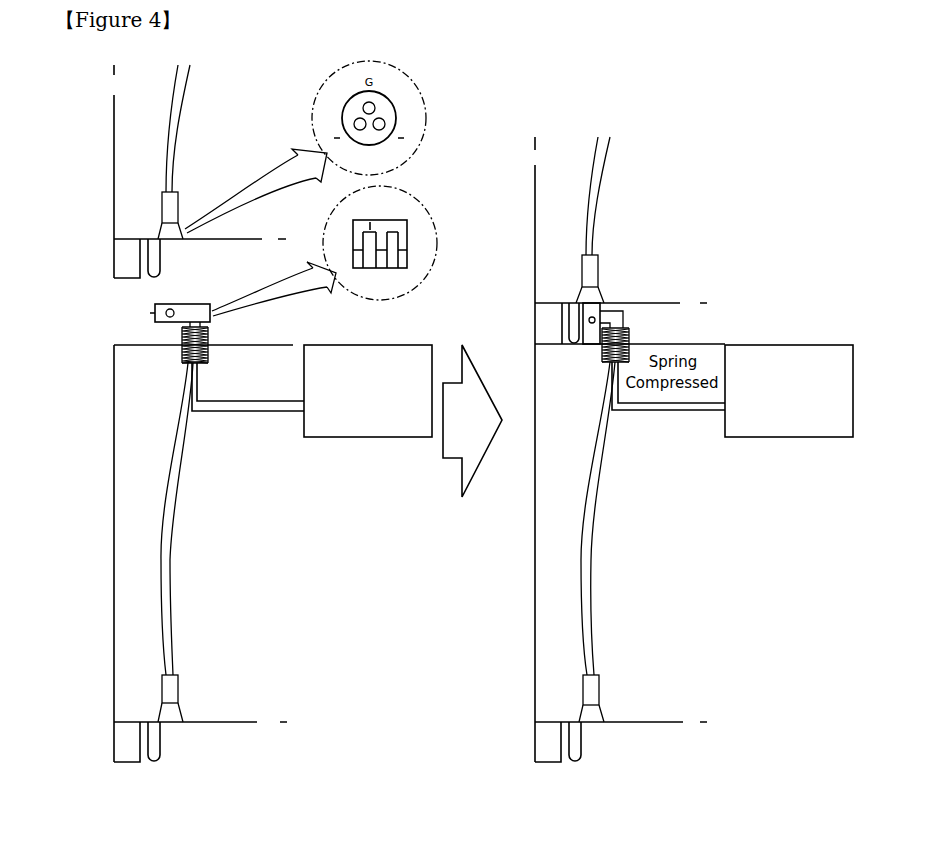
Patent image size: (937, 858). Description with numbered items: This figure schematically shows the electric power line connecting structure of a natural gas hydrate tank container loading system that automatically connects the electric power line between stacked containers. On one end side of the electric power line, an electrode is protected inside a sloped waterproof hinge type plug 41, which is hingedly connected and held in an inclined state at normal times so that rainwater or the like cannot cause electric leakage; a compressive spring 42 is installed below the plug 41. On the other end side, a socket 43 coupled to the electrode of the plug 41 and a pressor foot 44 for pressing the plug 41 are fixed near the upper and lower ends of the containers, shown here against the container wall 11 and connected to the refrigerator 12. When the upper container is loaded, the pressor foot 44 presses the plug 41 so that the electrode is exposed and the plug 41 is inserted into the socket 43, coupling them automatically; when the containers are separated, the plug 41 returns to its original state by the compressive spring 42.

The display stand wall 11 is at (126, 172).
The refrigerator 12 is at (345, 437).
The sloped waterproof hinge type plug 41 is at (150, 313).
The compressive spring 42 is at (212, 322).
The socket 43 is at (175, 205).
The pressor foot 44 is at (140, 265).